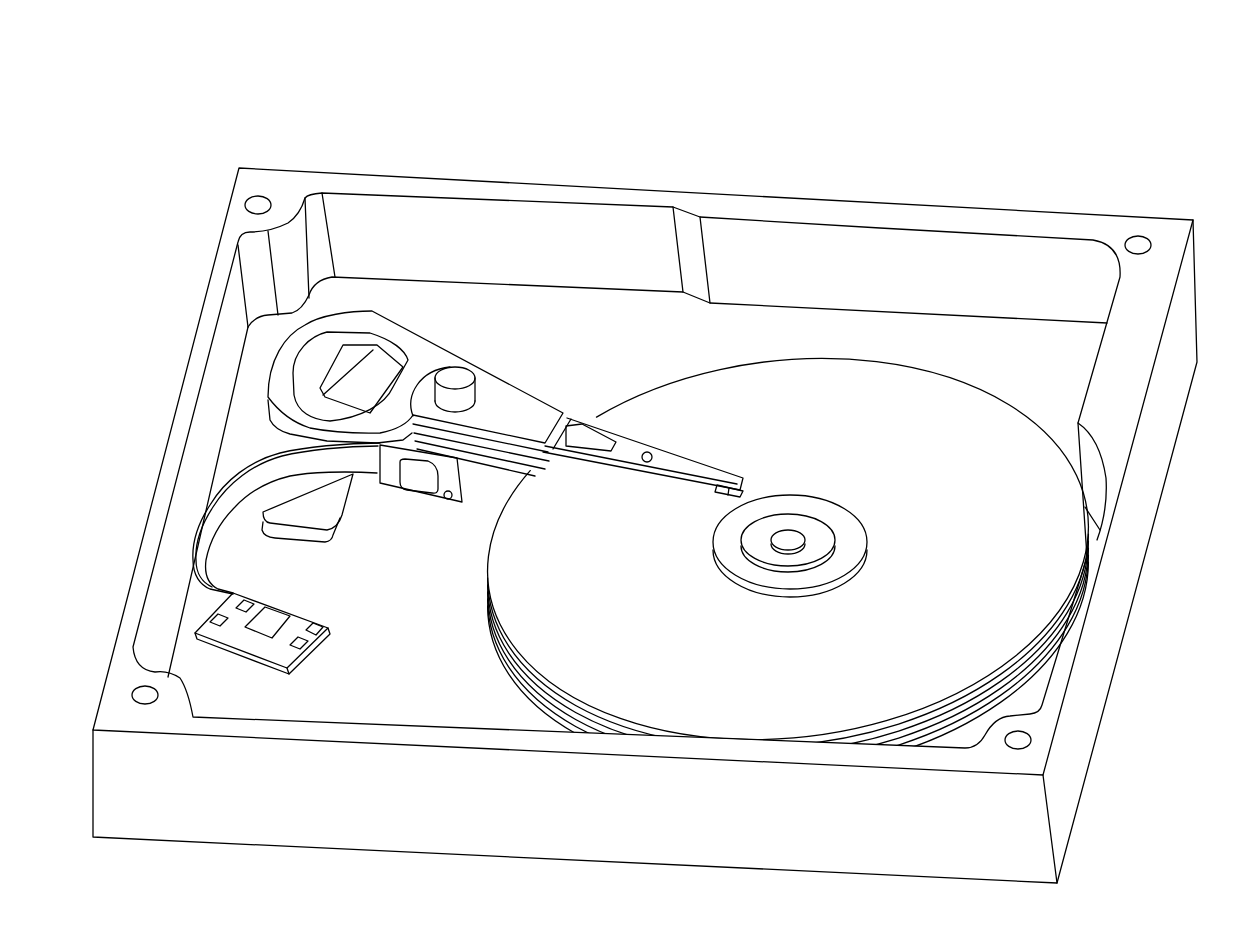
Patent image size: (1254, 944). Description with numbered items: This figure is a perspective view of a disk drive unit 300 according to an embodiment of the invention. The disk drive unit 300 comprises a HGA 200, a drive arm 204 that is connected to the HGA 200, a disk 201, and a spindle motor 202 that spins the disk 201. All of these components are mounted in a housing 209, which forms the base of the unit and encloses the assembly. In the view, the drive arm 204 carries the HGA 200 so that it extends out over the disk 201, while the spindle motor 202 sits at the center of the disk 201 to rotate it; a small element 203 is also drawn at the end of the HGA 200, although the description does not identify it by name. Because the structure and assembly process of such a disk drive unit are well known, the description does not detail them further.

The disk drive unit 300 is at (440, 151).
The housing 209 is at (176, 436).
The disk 201 is at (1057, 570).
The spindle motor 202 is at (827, 573).
The drive arm 204 is at (508, 407).
The HGA 200 is at (632, 455).
The slider 203 is at (724, 491).